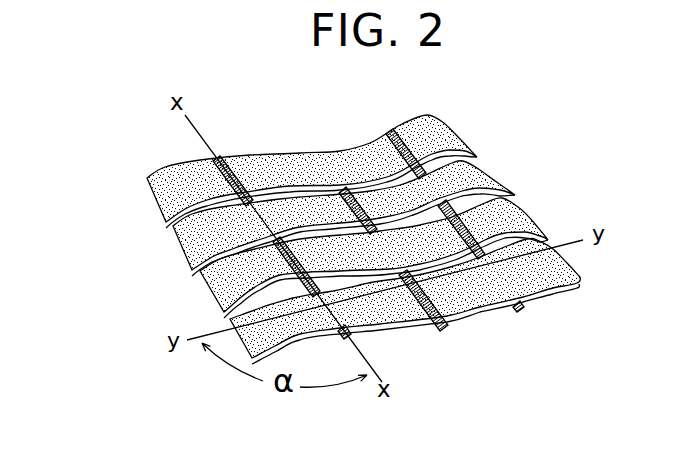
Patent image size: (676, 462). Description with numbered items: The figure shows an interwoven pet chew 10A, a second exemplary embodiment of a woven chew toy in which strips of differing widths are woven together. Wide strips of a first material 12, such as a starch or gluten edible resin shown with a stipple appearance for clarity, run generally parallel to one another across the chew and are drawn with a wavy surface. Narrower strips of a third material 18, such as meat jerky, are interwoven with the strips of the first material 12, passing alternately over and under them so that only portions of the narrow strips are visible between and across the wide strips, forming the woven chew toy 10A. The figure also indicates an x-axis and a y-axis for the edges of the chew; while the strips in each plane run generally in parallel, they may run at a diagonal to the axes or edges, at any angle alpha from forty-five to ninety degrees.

The interwoven pet chew 10A is at (143, 107).
The strips of a first material 12 is at (501, 219).
The strips of a third material 18 is at (517, 303).